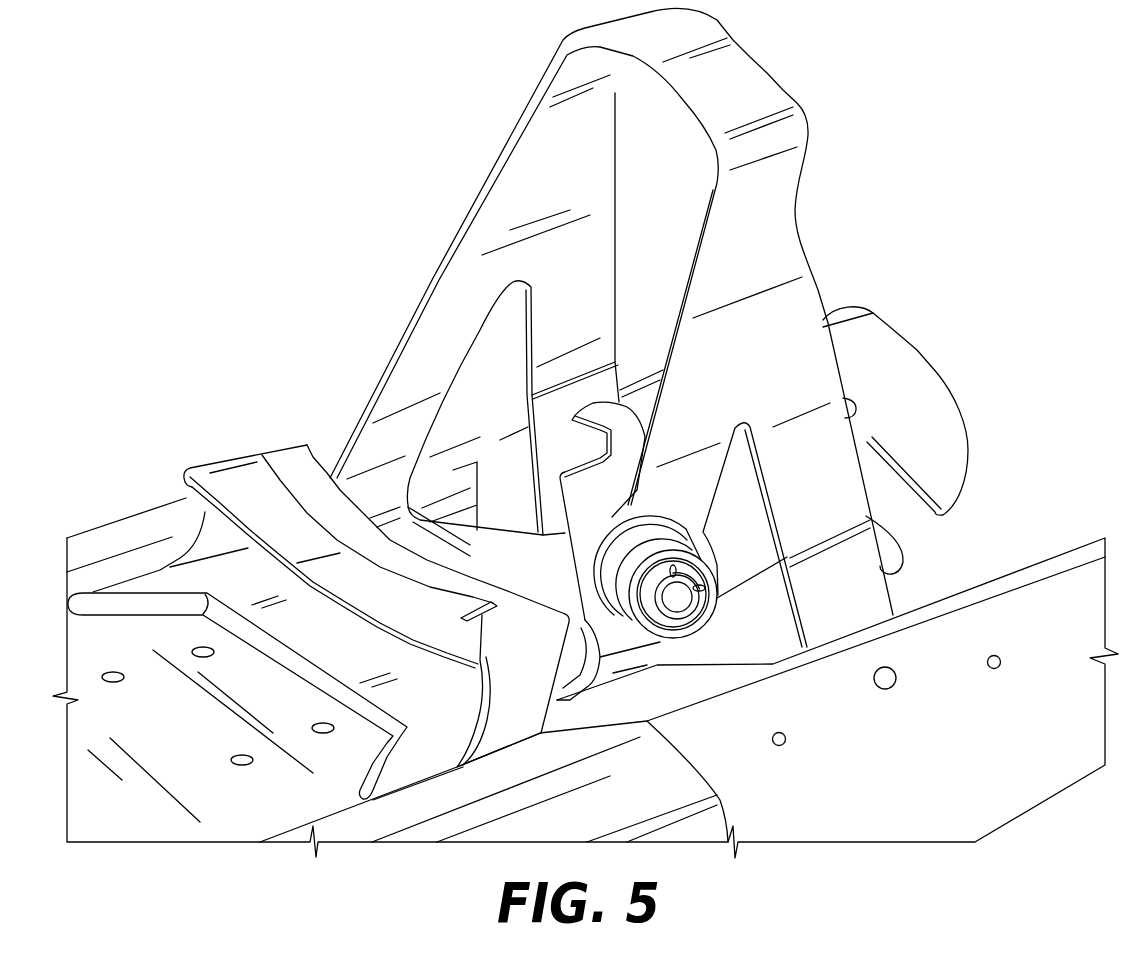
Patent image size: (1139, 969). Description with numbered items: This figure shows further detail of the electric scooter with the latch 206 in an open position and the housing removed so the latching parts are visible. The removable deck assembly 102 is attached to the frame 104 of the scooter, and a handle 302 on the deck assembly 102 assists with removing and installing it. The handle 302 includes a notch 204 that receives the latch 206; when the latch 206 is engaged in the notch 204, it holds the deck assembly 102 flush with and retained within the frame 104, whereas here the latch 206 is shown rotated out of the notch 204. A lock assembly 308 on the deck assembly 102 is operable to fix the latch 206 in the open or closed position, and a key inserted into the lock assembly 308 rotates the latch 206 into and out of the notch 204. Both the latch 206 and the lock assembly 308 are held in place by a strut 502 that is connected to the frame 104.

The deck assembly 102 is at (204, 735).
The frame 104 is at (611, 738).
The notch 204 is at (463, 610).
The latch 206 is at (621, 502).
The handle 302 is at (277, 525).
The lock assembly 308 is at (703, 605).
The strut 502 is at (576, 182).